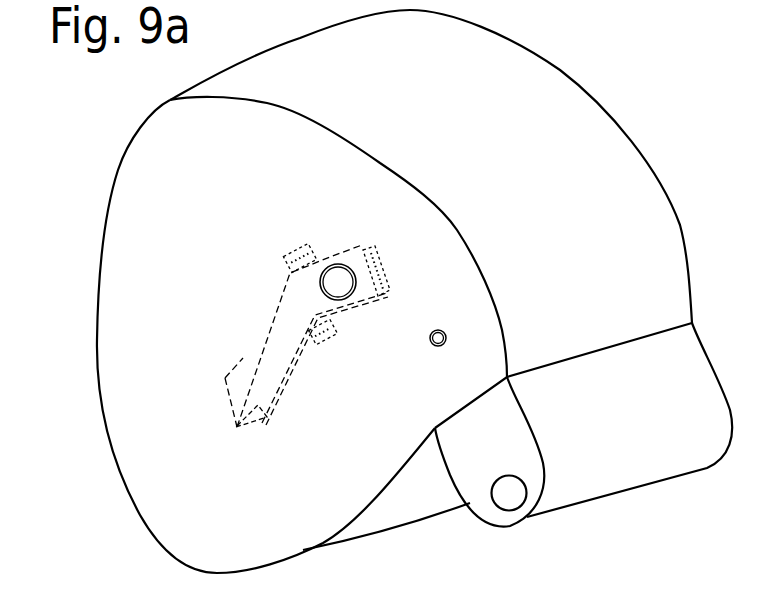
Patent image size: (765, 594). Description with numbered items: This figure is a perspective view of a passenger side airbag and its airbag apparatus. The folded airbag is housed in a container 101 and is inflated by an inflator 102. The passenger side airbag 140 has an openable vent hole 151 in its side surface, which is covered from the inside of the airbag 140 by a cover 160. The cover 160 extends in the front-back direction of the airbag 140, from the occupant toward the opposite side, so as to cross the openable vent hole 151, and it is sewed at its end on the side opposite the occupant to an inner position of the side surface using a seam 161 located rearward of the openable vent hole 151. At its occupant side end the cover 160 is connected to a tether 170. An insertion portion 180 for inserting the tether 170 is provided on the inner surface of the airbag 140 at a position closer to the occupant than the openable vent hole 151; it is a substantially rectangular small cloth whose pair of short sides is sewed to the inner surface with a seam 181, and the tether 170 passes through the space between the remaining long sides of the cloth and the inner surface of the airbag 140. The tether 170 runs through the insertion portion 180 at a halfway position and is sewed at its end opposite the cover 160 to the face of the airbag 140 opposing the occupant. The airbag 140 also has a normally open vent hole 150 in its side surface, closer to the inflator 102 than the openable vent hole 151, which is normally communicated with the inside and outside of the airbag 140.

The container 101 is at (623, 472).
The inflator 102 is at (509, 495).
The passenger side airbag 140 is at (562, 92).
The normally open vent hole 150 is at (450, 335).
The openable vent hole 151 is at (435, 197).
The cover 160 is at (326, 256).
The seam 161 is at (380, 261).
The tether 170 is at (244, 370).
The insertion portion 180 is at (300, 352).
The seam 181 is at (290, 252).